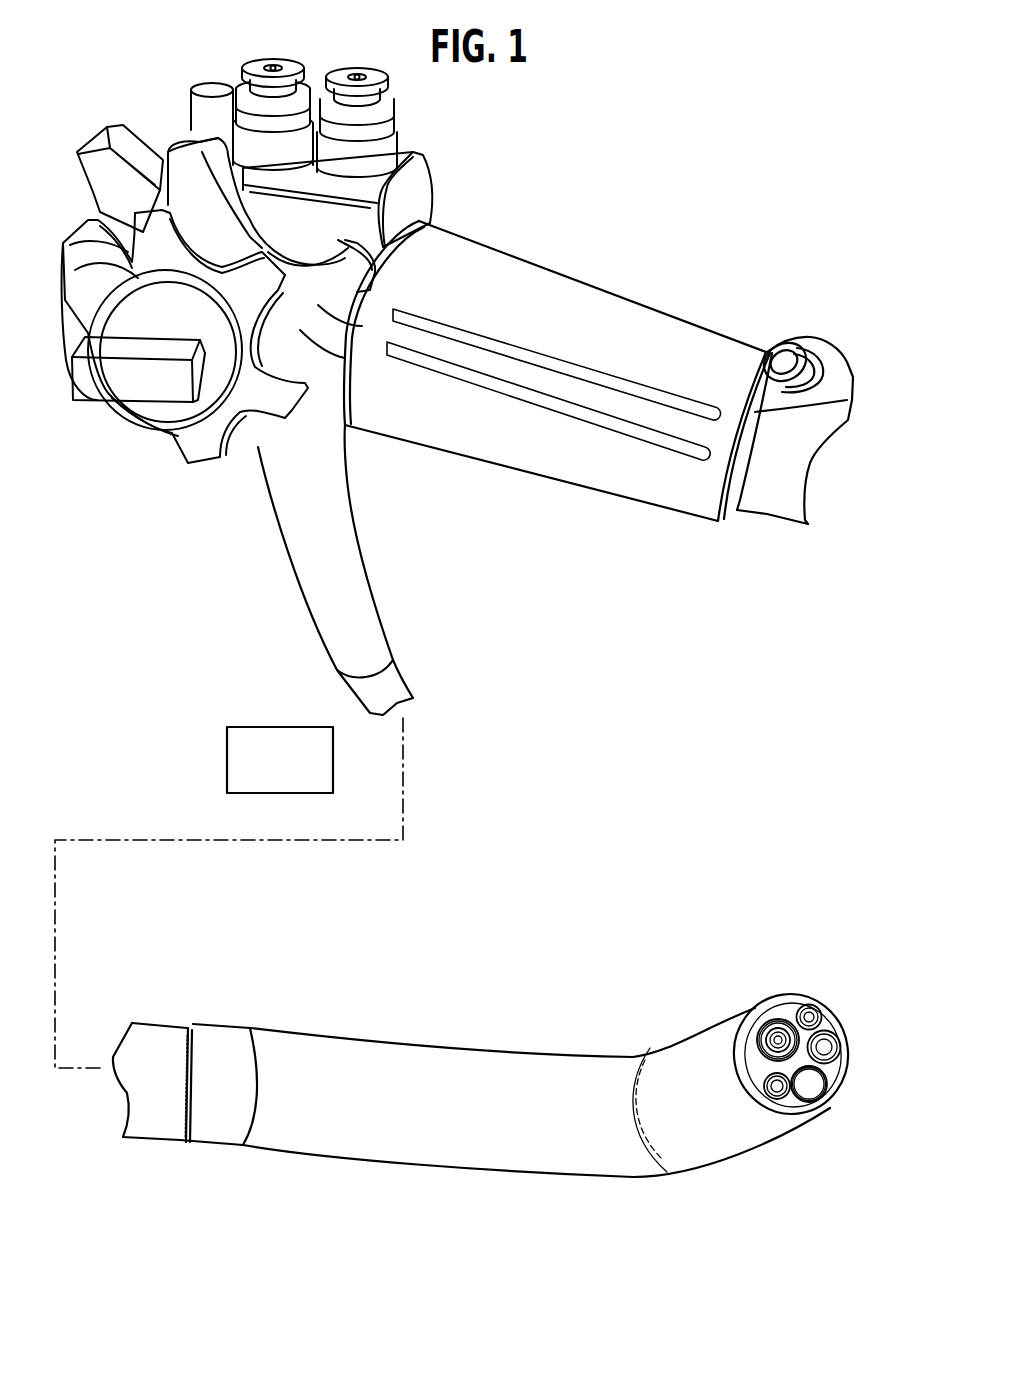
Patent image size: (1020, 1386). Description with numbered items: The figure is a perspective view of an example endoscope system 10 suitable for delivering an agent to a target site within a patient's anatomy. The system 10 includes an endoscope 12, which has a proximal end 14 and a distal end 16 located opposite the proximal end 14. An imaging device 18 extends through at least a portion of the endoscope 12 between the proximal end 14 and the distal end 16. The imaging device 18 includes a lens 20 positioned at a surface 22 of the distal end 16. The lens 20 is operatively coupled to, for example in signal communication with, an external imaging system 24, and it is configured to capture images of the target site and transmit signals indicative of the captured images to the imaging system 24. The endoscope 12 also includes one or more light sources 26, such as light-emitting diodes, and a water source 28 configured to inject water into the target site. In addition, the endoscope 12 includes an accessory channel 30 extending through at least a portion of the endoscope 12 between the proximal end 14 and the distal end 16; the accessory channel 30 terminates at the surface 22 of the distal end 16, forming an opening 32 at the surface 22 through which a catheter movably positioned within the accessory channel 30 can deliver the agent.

The system 10 is at (777, 275).
The endoscope 12 is at (608, 266).
The proximal end 14 is at (615, 520).
The distal end 16 is at (650, 1005).
The imaging device 18 is at (786, 1026).
The lens 20 is at (777, 1030).
The surface 22 is at (767, 1060).
The imaging system 24 is at (333, 760).
The light sources 26 is at (843, 1043).
The water source 28 is at (817, 1014).
The accessory channel 30 is at (814, 1086).
The opening 32 is at (820, 1103).